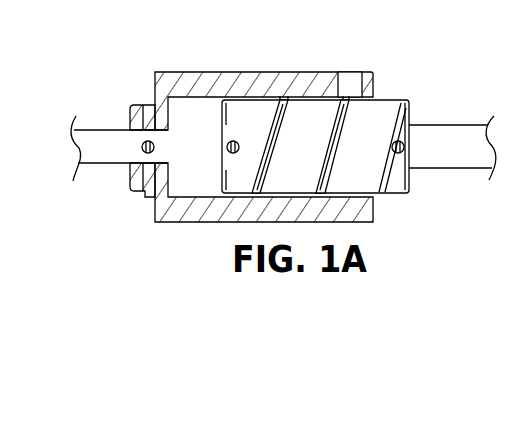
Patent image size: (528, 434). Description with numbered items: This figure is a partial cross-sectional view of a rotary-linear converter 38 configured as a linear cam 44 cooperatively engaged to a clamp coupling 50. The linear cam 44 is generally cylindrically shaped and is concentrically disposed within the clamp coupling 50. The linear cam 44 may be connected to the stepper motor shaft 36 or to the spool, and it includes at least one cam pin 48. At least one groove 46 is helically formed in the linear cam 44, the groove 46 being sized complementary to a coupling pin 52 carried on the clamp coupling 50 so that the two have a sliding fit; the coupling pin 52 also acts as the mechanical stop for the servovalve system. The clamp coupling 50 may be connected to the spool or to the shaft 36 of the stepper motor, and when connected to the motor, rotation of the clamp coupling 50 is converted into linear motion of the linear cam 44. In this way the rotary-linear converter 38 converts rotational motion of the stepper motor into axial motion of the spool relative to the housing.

The stepper motor shaft 36 is at (102, 131).
The rotary-linear converter 38 is at (142, 190).
The linear cam 44 is at (303, 120).
The groove 46 is at (335, 158).
The cam pin 48 is at (405, 148).
The clamp coupling 50 is at (193, 80).
The coupling pin 52 is at (348, 78).